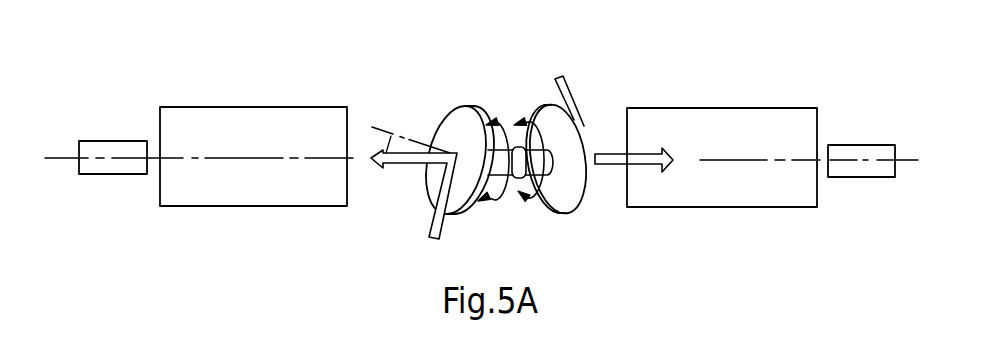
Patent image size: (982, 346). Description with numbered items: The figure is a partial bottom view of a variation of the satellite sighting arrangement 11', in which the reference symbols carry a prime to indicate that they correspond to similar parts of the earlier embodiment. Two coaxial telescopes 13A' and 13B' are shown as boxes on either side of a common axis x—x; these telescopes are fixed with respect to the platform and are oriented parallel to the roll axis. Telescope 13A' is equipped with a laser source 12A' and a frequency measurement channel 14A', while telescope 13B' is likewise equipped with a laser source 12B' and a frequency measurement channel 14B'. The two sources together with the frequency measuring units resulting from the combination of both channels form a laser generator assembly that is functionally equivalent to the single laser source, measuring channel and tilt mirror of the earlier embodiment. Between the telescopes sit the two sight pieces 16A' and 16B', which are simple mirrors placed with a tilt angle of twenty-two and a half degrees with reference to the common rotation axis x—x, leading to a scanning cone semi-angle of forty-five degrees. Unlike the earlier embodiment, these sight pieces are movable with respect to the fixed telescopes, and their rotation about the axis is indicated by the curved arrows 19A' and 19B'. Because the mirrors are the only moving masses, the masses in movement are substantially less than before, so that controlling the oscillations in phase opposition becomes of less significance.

The coupling arrangement 11' is at (482, 152).
The laser source 12A' is at (109, 197).
The laser source 12B' is at (865, 206).
The telescope 13A' is at (253, 195).
The telescope 13B' is at (722, 197).
The frequency measurement channel 14A' is at (113, 99).
The frequency measurement channel 14B' is at (861, 105).
The sight piece 16A' is at (405, 176).
The sight piece 16B' is at (573, 128).
The first rotation direction arrow 19A' is at (478, 119).
The second rotation direction arrow 19B' is at (534, 119).